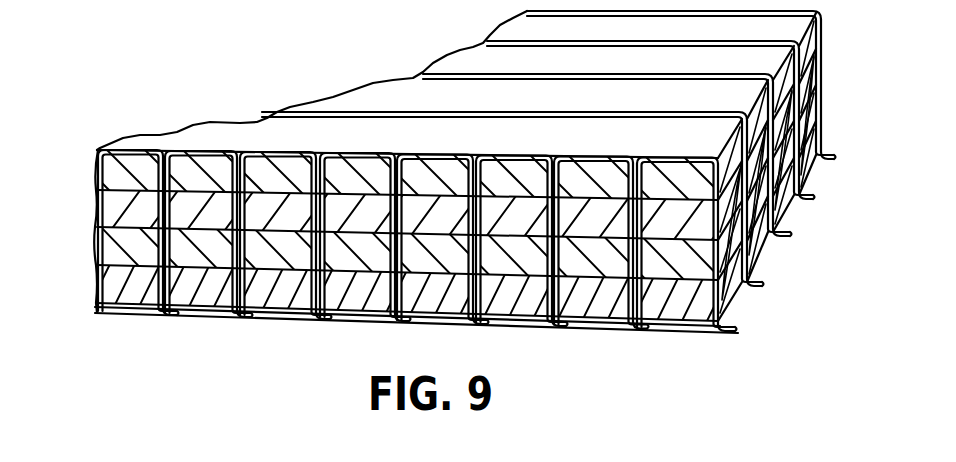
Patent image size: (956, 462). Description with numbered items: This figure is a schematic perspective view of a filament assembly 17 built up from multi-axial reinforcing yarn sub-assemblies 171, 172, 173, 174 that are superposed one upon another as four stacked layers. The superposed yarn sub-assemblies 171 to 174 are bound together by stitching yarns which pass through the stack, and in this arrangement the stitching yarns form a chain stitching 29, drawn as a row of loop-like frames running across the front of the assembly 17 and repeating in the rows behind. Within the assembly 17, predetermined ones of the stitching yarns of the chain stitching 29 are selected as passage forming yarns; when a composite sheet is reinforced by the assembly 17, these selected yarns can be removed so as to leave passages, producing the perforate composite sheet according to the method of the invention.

The assembly 17 is at (356, 72).
The chain stitching 29 is at (457, 148).
The yarn sub-assembly 171 is at (120, 160).
The yarn sub-assembly 172 is at (118, 206).
The yarn sub-assembly 173 is at (115, 245).
The yarn sub-assembly 174 is at (118, 282).